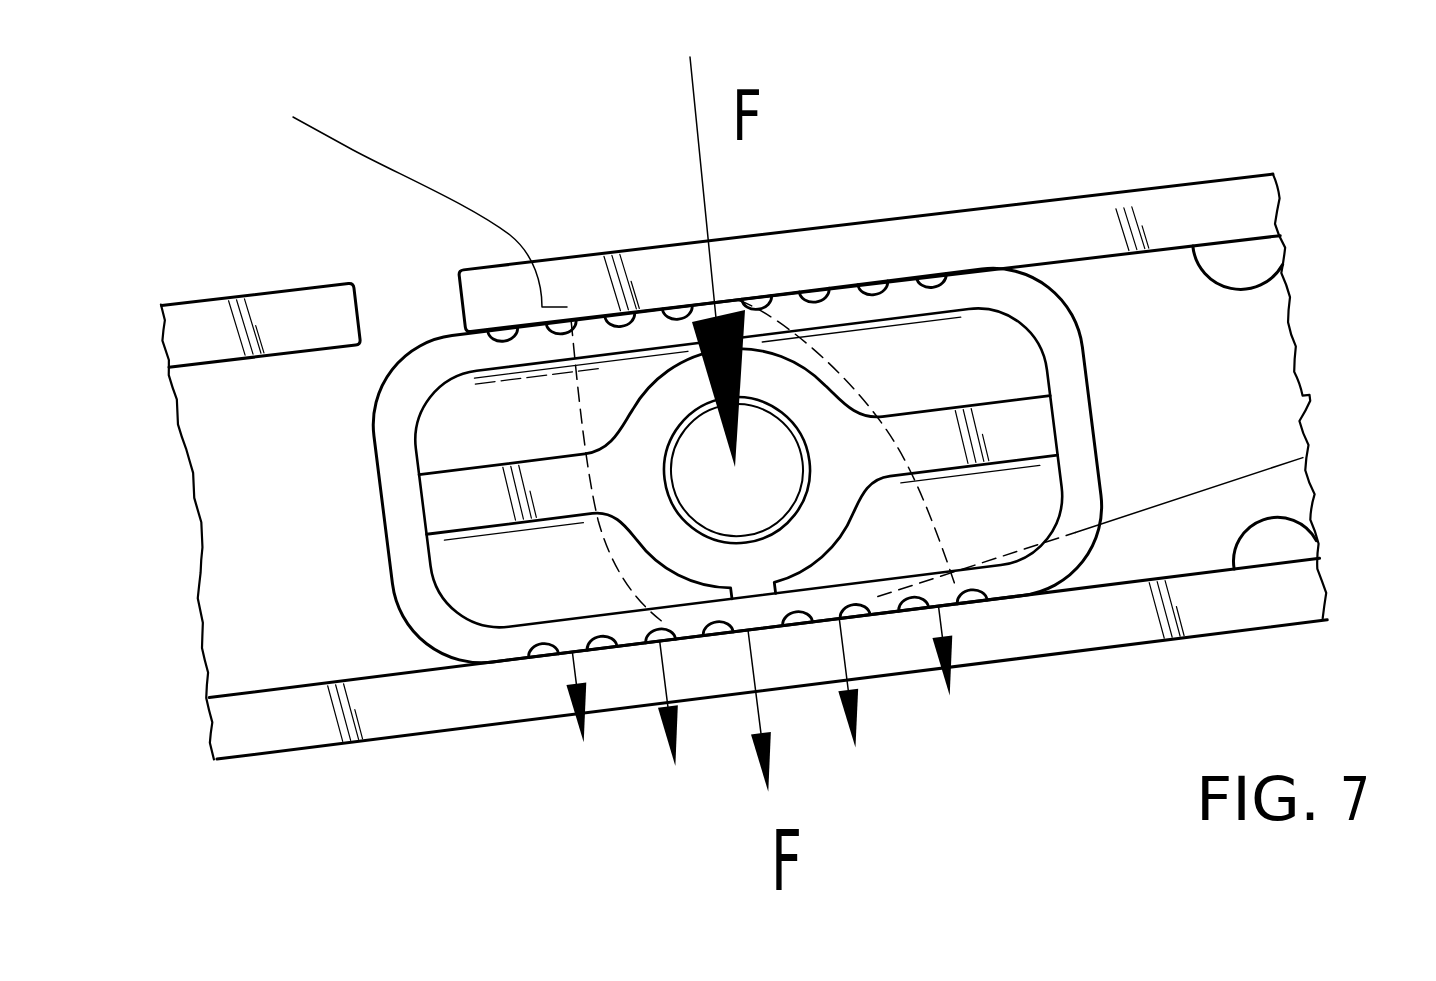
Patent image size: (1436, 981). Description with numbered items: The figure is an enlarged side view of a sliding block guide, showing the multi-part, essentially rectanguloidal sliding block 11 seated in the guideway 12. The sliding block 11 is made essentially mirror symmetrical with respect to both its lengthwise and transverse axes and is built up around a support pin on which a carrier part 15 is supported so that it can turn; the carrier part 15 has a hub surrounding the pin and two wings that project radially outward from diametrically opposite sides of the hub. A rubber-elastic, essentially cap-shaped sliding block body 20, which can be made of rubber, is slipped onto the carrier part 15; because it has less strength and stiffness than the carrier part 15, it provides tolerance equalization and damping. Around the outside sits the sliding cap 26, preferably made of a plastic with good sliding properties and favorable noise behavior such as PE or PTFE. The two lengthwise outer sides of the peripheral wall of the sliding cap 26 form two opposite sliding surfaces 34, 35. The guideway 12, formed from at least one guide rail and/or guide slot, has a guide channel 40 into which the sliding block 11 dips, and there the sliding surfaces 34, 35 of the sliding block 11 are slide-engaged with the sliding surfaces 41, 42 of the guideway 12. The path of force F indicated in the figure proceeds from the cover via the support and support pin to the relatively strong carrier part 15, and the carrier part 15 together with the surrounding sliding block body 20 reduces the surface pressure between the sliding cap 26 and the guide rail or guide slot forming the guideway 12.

The sliding block 11 is at (764, 478).
The guideway 12 is at (305, 714).
The carrier part 15 is at (497, 503).
The sliding block body 20 is at (473, 420).
The sliding cap 26 is at (1100, 447).
The sliding surface 34 is at (968, 275).
The sliding surface 35 is at (1010, 590).
The guide channel 40 is at (298, 524).
The sliding surface 41 is at (1283, 292).
The sliding surface 42 is at (1300, 517).